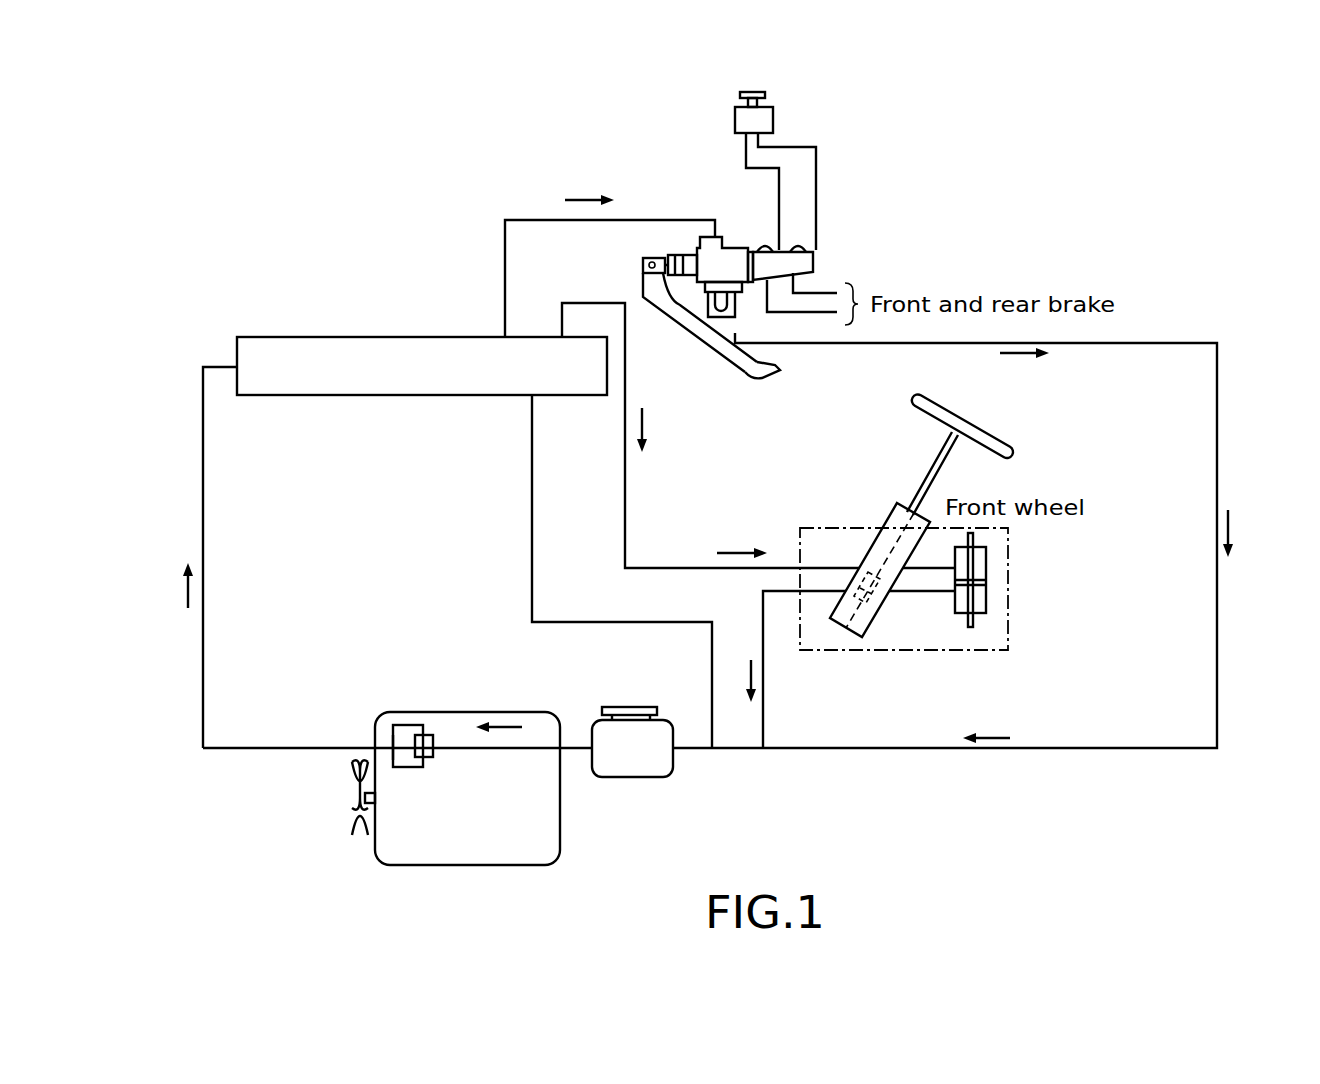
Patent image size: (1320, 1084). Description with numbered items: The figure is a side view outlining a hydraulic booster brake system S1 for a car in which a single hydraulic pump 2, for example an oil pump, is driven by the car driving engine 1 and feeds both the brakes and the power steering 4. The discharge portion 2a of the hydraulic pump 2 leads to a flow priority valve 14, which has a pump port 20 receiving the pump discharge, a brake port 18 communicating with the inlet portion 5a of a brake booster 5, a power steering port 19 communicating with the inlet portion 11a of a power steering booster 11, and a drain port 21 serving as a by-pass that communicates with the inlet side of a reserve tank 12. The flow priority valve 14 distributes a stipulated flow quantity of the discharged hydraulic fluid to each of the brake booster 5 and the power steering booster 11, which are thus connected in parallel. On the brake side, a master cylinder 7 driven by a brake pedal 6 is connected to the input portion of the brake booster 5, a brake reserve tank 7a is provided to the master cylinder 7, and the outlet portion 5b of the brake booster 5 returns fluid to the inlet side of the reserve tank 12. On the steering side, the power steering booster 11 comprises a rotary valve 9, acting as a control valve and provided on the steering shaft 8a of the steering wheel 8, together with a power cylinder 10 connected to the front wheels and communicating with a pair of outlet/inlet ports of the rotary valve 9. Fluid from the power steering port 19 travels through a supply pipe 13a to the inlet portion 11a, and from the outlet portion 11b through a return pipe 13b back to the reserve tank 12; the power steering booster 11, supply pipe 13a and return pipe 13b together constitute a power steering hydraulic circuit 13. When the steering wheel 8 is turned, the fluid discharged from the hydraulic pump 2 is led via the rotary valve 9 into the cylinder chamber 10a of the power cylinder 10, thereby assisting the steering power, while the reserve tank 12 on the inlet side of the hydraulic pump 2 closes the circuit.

The power steering system S1 is at (1058, 202).
The car driving engine 1 is at (510, 866).
The hydraulic pump 2 is at (413, 768).
The discharge portion 2a is at (393, 742).
The power steering 4 is at (1042, 430).
The brake booster 5 is at (735, 250).
The inlet portion 5a is at (705, 238).
The outlet portion 5b is at (692, 278).
The brake pedal 6 is at (738, 376).
The master cylinder 7 is at (815, 262).
The brake reserve tank 7a is at (773, 118).
The steering wheel 8 is at (950, 420).
The steering shaft 8a is at (926, 490).
The rotary valve 9 is at (880, 595).
The power cylinder 10 is at (957, 615).
The cylinder chamber 10a is at (990, 593).
The power steering booster 11 is at (944, 688).
The inlet portion 11a is at (858, 575).
The outlet portion 11b is at (845, 600).
The reserve tank 12 is at (634, 778).
The power steering hydraulic circuit 13 is at (668, 543).
The supply pipe 13a is at (625, 515).
The return pipe 13b is at (763, 603).
The flow priority valve 14 is at (338, 397).
The brake port 18 is at (505, 337).
The power steering port 19 is at (562, 337).
The pump port 20 is at (237, 360).
The drain port 21 is at (535, 397).